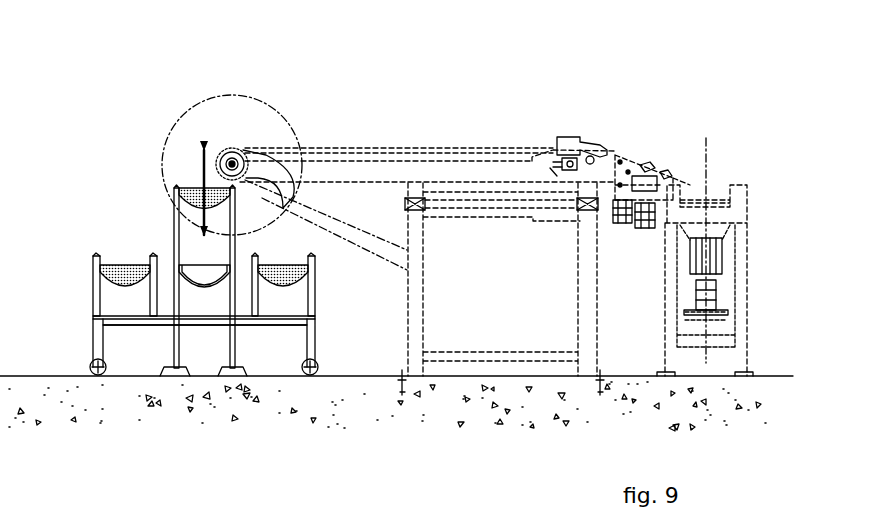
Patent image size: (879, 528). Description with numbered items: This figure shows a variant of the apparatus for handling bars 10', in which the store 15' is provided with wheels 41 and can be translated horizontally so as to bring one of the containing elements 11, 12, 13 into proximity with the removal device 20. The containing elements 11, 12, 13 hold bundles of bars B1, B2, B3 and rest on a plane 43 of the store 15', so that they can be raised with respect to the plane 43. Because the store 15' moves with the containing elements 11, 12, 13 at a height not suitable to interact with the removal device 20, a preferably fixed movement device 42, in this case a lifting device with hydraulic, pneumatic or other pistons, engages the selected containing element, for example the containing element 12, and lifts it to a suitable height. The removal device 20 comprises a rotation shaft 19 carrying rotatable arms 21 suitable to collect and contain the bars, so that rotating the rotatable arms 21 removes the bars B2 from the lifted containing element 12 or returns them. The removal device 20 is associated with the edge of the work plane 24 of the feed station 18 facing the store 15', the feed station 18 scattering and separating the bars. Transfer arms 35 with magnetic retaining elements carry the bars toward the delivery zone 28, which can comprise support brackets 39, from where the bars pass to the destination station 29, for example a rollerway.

The apparatus for handling bars 10' is at (331, 131).
The containing element 11 is at (97, 297).
The containing element 12 is at (173, 283).
The containing element 13 is at (312, 302).
The store 15' is at (208, 400).
The feed station 18 is at (417, 102).
The rotation shaft 19 is at (230, 160).
The removal device 20 is at (296, 161).
The rotatable arms 21 is at (275, 167).
The work plane 24 is at (455, 147).
The delivery zone 28 is at (618, 155).
The destination station 29 is at (752, 230).
The transfer arms 35 is at (562, 140).
The support brackets 39 is at (628, 172).
The wheels 41 is at (95, 376).
The movement device 42 is at (163, 342).
The plane 43 is at (273, 320).
The bars B1 is at (118, 270).
The bars B2 is at (192, 197).
The bars B3 is at (300, 268).